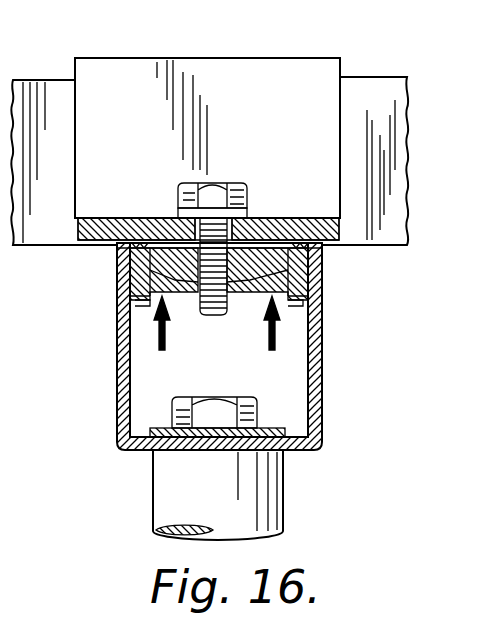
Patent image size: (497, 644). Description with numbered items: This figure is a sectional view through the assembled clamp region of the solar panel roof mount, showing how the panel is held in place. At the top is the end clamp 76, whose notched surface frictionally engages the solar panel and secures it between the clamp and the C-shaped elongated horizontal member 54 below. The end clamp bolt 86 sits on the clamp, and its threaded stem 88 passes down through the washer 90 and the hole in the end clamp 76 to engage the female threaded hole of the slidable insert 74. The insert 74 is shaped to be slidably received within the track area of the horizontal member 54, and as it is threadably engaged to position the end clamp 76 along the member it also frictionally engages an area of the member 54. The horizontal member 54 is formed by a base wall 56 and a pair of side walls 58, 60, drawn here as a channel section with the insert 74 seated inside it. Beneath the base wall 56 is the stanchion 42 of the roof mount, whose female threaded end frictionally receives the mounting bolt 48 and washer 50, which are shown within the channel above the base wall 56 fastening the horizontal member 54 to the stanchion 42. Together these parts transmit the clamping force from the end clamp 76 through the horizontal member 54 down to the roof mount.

The stanchion 42 is at (150, 492).
The mounting bolt 48 is at (258, 411).
The washer 50 is at (150, 432).
The horizontal member 54 is at (118, 338).
The base wall 56 is at (302, 452).
The side wall 58 is at (321, 348).
The side wall 60 is at (118, 402).
The slidable insert 74 is at (118, 277).
The end clamp 76 is at (248, 68).
The end clamp bolt 86 is at (243, 182).
The threaded stem 88 is at (317, 277).
The washer 90 is at (178, 213).